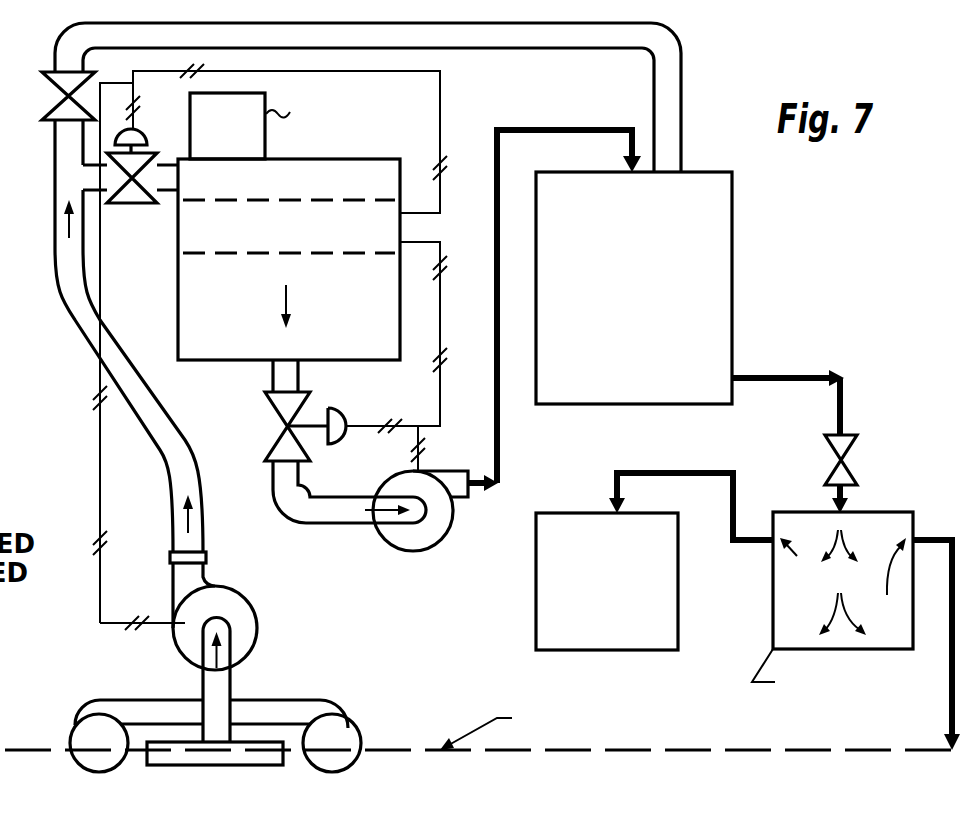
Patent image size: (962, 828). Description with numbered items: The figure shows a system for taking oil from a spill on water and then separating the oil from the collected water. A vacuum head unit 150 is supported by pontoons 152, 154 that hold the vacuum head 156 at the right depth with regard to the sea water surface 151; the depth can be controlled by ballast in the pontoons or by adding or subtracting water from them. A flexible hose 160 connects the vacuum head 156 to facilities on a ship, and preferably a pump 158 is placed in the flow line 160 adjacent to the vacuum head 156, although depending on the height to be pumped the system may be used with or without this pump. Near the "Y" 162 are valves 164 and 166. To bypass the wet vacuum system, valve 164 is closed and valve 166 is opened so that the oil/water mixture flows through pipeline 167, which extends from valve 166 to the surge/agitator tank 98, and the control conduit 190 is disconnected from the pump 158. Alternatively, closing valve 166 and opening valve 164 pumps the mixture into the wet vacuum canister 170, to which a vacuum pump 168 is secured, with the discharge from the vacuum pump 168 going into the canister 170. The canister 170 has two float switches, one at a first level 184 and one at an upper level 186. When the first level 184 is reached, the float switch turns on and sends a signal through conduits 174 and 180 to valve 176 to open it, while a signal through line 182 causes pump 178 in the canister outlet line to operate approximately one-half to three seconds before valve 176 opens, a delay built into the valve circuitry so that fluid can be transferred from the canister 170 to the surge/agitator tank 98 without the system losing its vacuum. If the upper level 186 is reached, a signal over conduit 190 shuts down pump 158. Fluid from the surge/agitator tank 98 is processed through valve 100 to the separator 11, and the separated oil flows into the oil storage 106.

The separator 11 is at (886, 512).
The surge/agitator tank 98 is at (733, 189).
The valve 100 is at (855, 456).
The oil storage 106 is at (536, 612).
The vacuum head unit 150 is at (267, 688).
The sea water surface 151 is at (806, 750).
The pontoon 152 is at (352, 734).
The pontoon 154 is at (76, 742).
The vacuum head 156 is at (222, 758).
The pump 158 is at (248, 611).
The flexible hose 160 is at (158, 424).
The Y 162 is at (55, 164).
The valve 164 is at (133, 184).
The valve 166 is at (63, 98).
The pipeline 167 is at (618, 48).
The vacuum pump 168 is at (235, 150).
The vacuum canister 170 is at (179, 296).
The conduit 174 is at (441, 380).
The valve 176 is at (273, 414).
The pump 178 is at (414, 547).
The conduit 180 is at (379, 425).
The line 182 is at (418, 440).
The first level 184 is at (334, 255).
The upper level 186 is at (326, 200).
The control conduit 190 is at (441, 83).